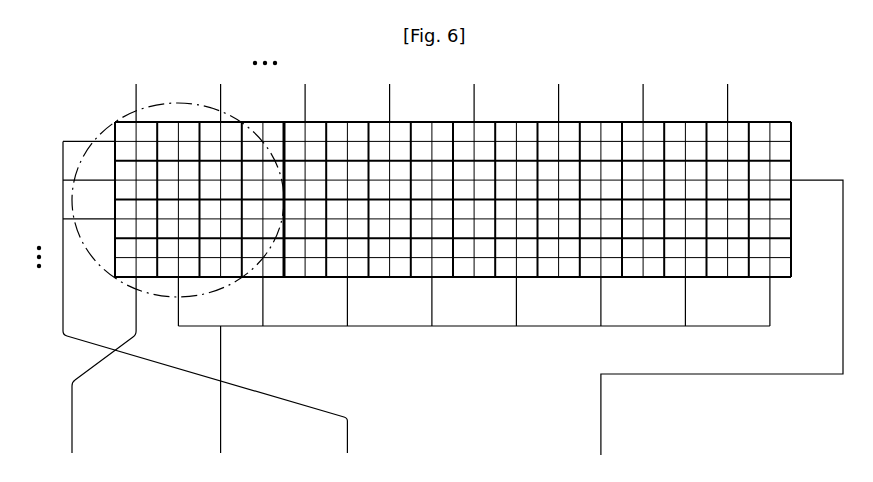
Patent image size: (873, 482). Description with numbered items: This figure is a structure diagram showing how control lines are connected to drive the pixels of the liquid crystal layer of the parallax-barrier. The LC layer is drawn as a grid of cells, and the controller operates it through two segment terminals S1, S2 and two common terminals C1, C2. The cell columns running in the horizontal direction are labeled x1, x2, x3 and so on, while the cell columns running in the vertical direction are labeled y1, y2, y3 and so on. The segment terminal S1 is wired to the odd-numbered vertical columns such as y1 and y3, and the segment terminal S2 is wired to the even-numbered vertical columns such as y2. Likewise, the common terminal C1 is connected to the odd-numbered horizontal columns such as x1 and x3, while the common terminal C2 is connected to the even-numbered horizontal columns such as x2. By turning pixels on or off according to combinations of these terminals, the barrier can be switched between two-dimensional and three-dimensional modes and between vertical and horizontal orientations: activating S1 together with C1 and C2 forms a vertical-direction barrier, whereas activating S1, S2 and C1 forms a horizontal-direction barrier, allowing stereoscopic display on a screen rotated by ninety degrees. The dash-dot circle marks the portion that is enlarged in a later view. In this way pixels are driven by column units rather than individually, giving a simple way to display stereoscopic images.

The vertical-direction cell column y1 is at (137, 87).
The vertical-direction cell column y2 is at (179, 63).
The vertical-direction cell column y3 is at (220, 87).
The horizontal-direction cell column x1 is at (72, 145).
The horizontal-direction cell column x2 is at (72, 183).
The horizontal-direction cell column x3 is at (72, 222).
The segment terminal S1 is at (99, 379).
The segment terminal S2 is at (223, 404).
The common terminal C1 is at (214, 311).
The common terminal C2 is at (716, 331).